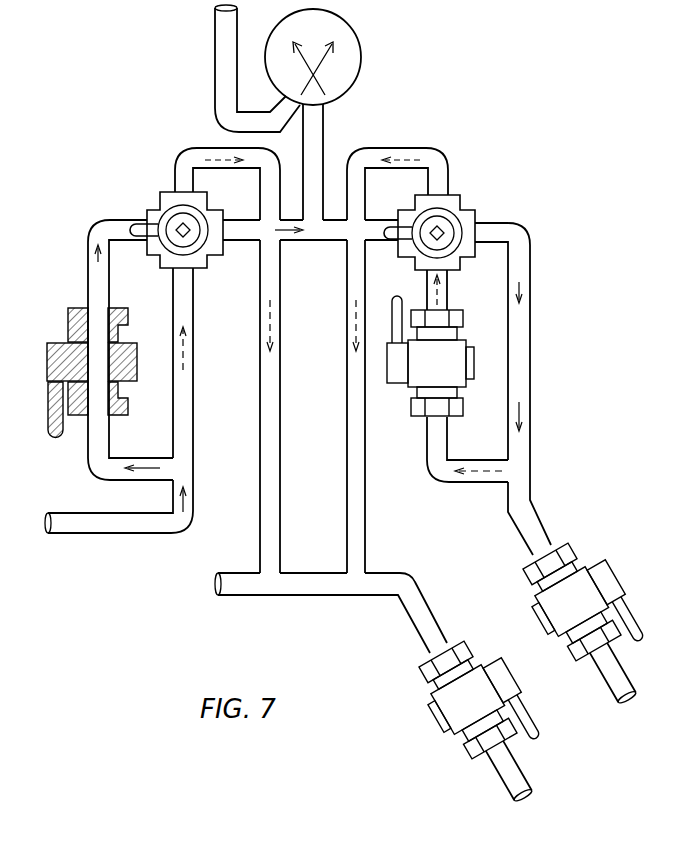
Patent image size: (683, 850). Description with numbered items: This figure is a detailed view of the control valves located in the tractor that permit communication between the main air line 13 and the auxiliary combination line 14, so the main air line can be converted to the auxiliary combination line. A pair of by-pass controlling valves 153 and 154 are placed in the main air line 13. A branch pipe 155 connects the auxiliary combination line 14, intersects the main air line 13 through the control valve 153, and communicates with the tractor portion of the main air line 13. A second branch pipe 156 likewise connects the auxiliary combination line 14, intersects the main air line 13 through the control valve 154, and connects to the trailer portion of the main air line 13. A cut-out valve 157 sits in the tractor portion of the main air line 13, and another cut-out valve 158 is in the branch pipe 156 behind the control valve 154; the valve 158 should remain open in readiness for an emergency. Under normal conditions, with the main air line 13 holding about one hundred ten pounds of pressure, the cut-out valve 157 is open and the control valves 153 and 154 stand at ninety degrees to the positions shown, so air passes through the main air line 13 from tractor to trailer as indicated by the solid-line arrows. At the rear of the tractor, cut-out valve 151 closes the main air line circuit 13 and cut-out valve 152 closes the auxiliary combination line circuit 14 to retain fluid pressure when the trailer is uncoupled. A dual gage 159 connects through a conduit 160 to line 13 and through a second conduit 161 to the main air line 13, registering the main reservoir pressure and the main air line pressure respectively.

The main air line 13 is at (531, 368).
The auxiliary combination line 14 is at (313, 597).
The cut-out valve 151 is at (575, 570).
The cut-out valve 152 is at (435, 724).
The by-pass controlling valve 153 is at (160, 200).
The by-pass controlling valve 154 is at (462, 208).
The branch pipe 155 is at (194, 368).
The second branch pipe 156 is at (408, 457).
The cut-out valve 157 is at (70, 333).
The cut-out valve 158 is at (460, 312).
The dual gage 159 is at (360, 64).
The conduit 160 is at (215, 34).
The second conduit 161 is at (323, 138).